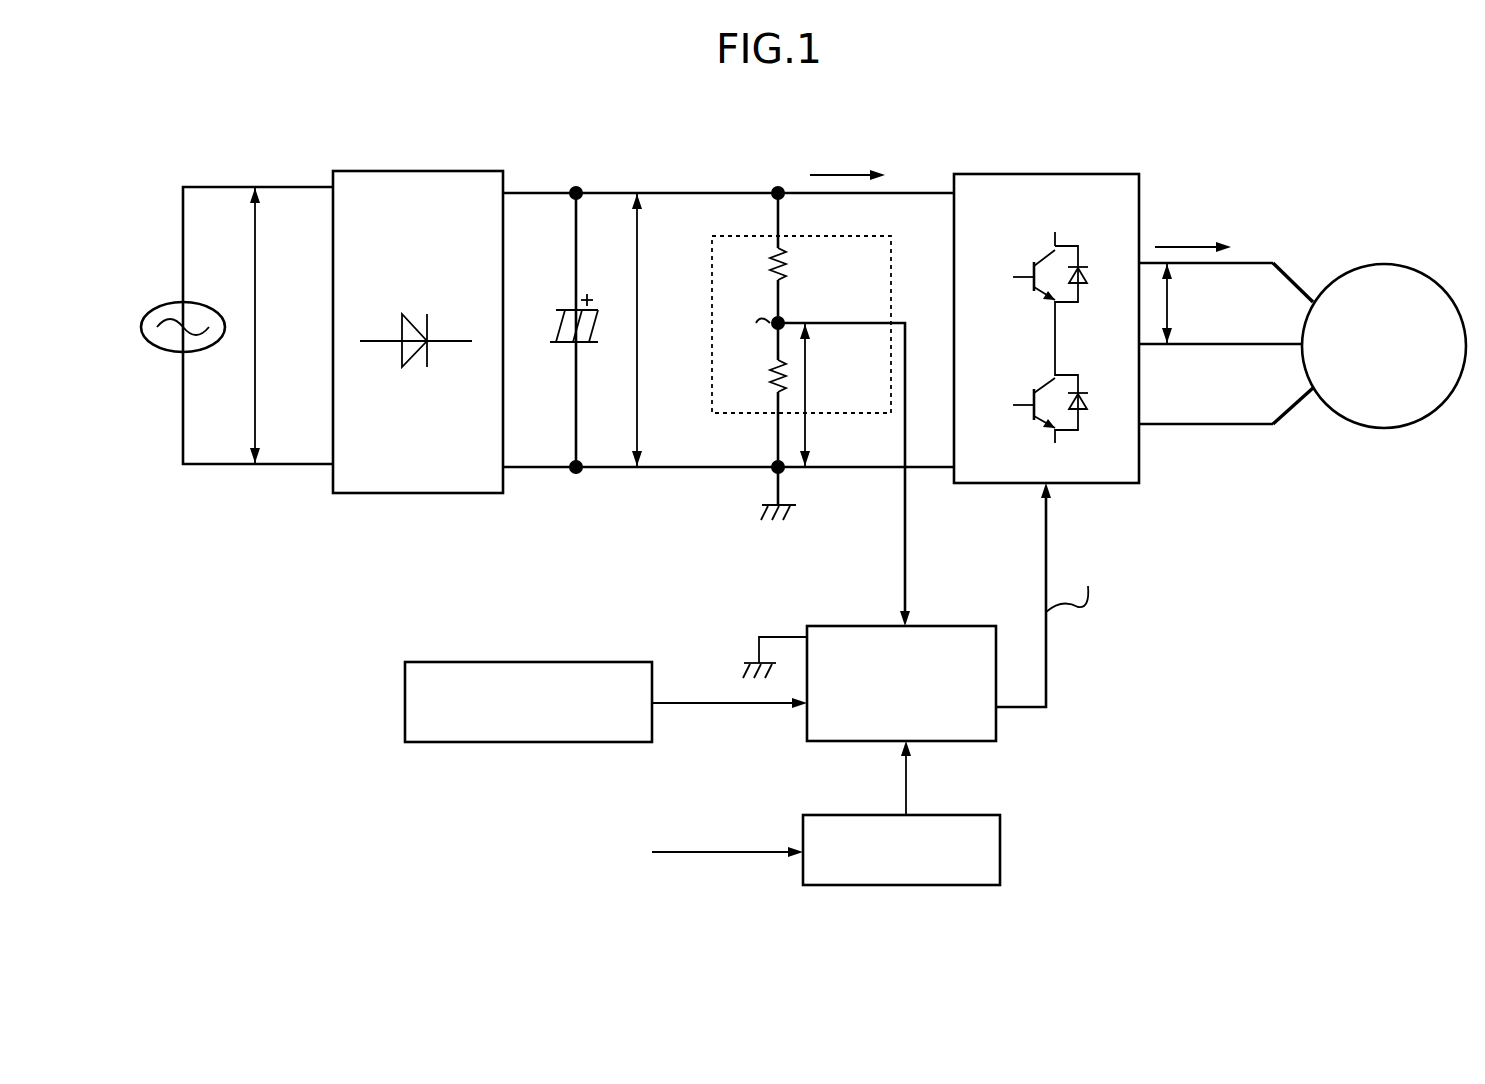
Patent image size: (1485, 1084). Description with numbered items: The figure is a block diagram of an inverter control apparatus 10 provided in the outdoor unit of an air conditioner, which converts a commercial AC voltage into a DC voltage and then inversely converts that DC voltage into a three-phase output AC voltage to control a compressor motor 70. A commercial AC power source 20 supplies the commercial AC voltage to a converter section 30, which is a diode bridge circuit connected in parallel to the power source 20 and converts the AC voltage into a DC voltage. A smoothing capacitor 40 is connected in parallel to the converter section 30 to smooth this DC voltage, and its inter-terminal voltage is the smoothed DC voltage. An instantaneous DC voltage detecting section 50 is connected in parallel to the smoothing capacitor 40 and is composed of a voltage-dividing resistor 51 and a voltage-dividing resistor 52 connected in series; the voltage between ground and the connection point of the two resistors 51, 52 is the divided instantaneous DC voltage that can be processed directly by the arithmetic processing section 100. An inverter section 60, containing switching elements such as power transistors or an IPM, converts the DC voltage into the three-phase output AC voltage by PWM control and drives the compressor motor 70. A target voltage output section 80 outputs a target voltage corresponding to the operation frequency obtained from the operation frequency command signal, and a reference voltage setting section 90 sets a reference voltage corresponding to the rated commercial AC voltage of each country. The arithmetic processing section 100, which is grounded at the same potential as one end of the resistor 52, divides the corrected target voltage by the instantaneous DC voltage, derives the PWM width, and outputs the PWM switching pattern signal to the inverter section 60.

The inverter control apparatus 10 is at (1172, 147).
The commercial AC power source 20 is at (201, 311).
The converter section 30 is at (470, 180).
The smoothing capacitor 40 is at (563, 310).
The instantaneous DC voltage detecting section 50 is at (882, 278).
The voltage-dividing resistor 51 is at (770, 263).
The voltage-dividing resistor 52 is at (770, 374).
The inverter section 60 is at (1107, 183).
The compressor motor 70 is at (1418, 275).
The target voltage output section 80 is at (964, 821).
The reference voltage setting section 90 is at (610, 668).
The arithmetic processing section 100 is at (953, 631).